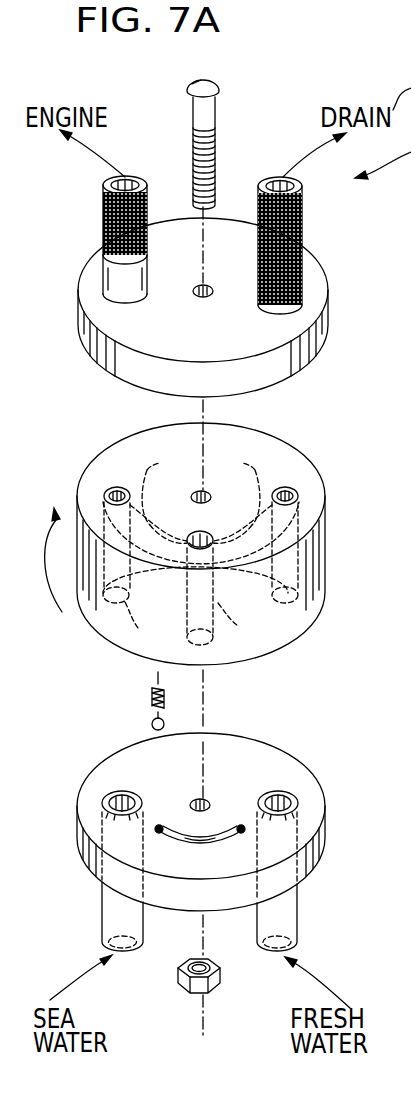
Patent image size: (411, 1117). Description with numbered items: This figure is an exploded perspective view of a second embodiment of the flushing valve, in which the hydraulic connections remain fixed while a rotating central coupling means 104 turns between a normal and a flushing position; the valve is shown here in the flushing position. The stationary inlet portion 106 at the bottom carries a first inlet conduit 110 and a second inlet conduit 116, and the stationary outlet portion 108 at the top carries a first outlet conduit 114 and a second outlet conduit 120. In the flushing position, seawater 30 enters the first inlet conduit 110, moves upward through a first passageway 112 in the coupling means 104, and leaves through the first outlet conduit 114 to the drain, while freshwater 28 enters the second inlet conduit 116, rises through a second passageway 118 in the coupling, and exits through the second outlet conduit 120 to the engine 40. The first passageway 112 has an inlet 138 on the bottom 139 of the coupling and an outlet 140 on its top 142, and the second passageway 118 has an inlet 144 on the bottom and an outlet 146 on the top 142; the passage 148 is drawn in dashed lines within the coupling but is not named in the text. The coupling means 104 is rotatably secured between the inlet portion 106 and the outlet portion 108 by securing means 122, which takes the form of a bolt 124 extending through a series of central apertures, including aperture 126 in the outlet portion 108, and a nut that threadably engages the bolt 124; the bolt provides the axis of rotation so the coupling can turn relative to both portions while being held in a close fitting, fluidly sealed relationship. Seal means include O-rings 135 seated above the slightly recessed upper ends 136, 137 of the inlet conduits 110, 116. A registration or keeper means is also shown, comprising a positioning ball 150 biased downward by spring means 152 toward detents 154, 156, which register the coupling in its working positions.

The freshwater 28 is at (333, 990).
The seawater 30 is at (95, 988).
The engine 40 is at (62, 108).
The rotating central coupling means 104 is at (292, 452).
The inlet portion 106 is at (318, 790).
The outlet portion 108 is at (322, 273).
The first inlet conduit 110 is at (101, 905).
The first passageway 112 is at (201, 490).
The first outlet conduit 114 is at (300, 218).
The second inlet conduit 116 is at (300, 926).
The second passageway 118 is at (201, 550).
The second outlet conduit 120 is at (103, 210).
The securing means 122 is at (226, 139).
The bolt 124 is at (207, 995).
The aperture 126 is at (213, 293).
The O-rings 135 is at (287, 791).
The recessed upper end 136 is at (77, 810).
The recessed upper end 137 is at (326, 812).
The inlet 138 is at (195, 607).
The bottom 139 is at (290, 654).
The outlet 140 is at (298, 490).
The top 142 is at (118, 461).
The inlet 144 is at (305, 600).
The outlet 146 is at (104, 490).
The passage 148 is at (258, 617).
The positioning ball 150 is at (152, 727).
The spring means 152 is at (150, 698).
The detent 154 is at (243, 826).
The detent 156 is at (155, 826).